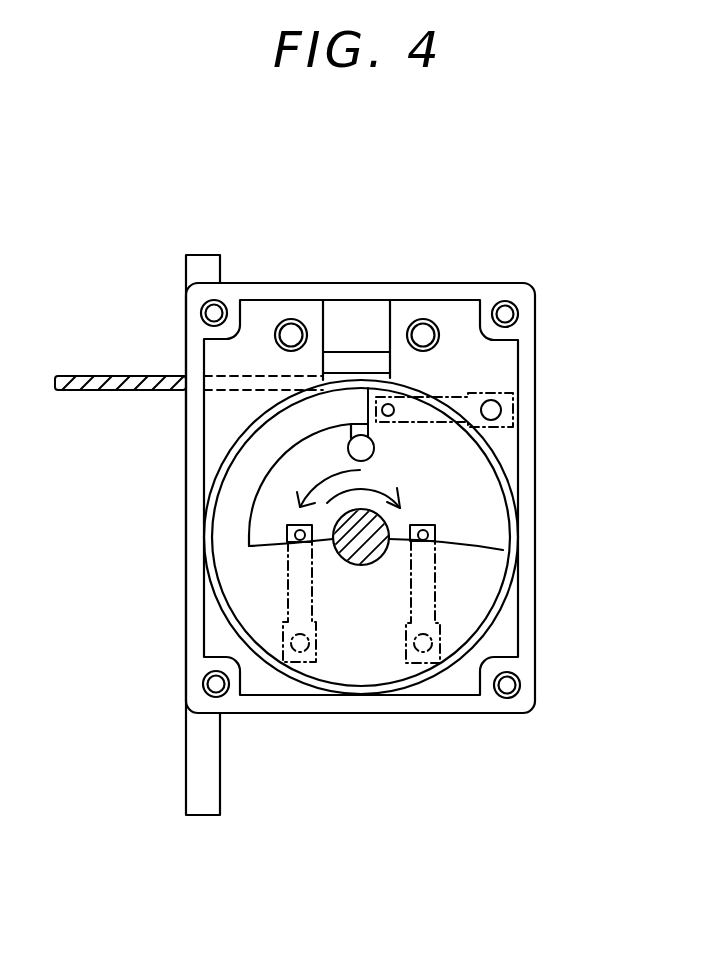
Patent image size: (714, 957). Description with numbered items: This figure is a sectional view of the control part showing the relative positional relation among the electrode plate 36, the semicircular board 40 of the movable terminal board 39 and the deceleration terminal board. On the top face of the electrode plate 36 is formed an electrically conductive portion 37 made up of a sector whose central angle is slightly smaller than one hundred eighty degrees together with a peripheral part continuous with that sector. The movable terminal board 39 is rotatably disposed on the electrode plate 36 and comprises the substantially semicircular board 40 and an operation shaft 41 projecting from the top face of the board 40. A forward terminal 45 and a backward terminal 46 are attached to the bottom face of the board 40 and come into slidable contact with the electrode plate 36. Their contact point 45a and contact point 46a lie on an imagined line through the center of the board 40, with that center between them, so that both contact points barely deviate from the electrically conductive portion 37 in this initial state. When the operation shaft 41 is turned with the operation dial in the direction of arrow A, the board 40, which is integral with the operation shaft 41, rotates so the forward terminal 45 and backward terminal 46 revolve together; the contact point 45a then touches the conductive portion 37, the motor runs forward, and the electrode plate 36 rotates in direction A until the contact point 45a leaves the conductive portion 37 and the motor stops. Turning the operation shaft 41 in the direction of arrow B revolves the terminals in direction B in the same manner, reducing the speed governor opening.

The electrode plate 36 is at (468, 472).
The electrically conductive portion 37 is at (225, 513).
The movable terminal board 39 is at (480, 535).
The semicircular board 40 is at (268, 497).
The operation shaft 41 is at (362, 565).
The forward terminal 45 is at (527, 596).
The contact point of the forward terminal 45a is at (440, 528).
The backward terminal 46 is at (184, 649).
The contact point of the backward terminal 46a is at (293, 546).
The direction of arrow A is at (383, 486).
The direction of arrow B is at (323, 480).